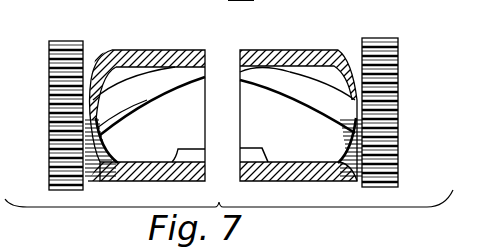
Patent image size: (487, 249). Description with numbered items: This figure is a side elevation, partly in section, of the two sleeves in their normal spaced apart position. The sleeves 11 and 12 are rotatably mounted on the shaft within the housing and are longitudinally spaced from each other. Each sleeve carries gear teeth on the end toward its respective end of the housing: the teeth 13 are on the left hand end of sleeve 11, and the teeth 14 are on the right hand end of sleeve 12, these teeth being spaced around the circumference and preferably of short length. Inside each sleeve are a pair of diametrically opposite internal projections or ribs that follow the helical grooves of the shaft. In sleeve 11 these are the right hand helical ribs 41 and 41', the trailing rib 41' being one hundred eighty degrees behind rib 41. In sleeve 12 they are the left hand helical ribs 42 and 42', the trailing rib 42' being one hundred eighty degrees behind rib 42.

The sleeve 11 is at (152, 33).
The sleeve 12 is at (302, 34).
The gear teeth 13 is at (49, 51).
The gear teeth 14 is at (443, 33).
The internal projection 41 is at (152, 101).
The trailing right hand rib 41' is at (175, 147).
The internal projection 42 is at (297, 106).
The trailing left hand rib 42' is at (273, 145).